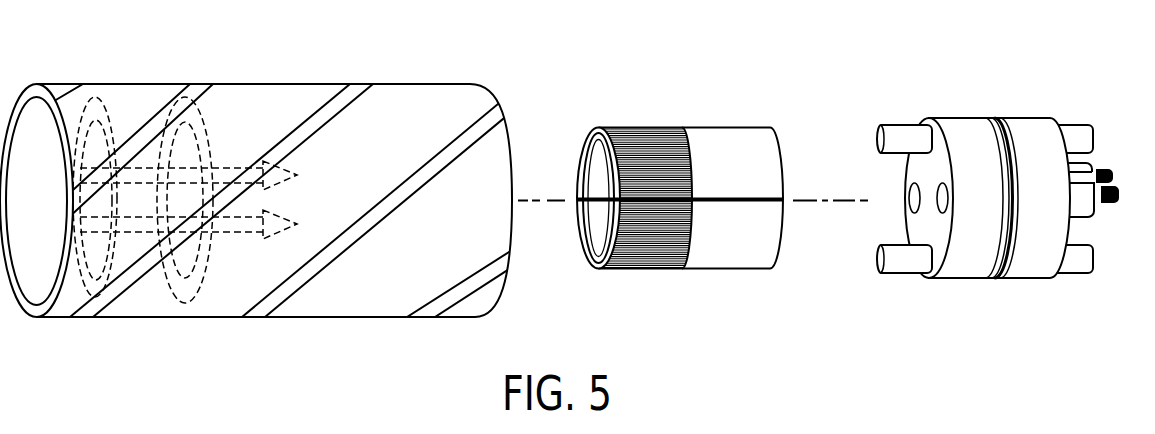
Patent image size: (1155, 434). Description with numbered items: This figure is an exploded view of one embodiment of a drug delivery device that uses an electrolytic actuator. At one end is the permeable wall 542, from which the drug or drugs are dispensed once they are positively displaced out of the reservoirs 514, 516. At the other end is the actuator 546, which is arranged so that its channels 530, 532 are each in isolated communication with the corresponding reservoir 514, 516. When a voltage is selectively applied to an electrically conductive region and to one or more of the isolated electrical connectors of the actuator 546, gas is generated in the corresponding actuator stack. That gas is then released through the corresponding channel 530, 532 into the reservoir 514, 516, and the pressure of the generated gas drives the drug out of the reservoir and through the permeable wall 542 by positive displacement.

The reservoir 514 is at (680, 202).
The reservoir 516 is at (740, 137).
The channel 530 is at (898, 266).
The channel 532 is at (893, 130).
The permeable wall 542 is at (204, 307).
The actuator 546 is at (992, 173).